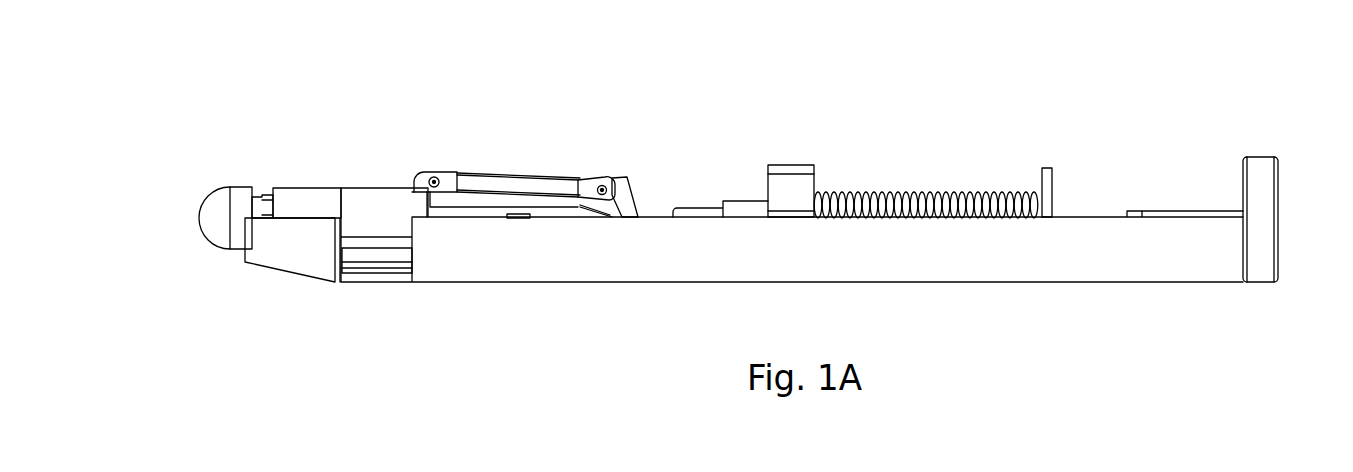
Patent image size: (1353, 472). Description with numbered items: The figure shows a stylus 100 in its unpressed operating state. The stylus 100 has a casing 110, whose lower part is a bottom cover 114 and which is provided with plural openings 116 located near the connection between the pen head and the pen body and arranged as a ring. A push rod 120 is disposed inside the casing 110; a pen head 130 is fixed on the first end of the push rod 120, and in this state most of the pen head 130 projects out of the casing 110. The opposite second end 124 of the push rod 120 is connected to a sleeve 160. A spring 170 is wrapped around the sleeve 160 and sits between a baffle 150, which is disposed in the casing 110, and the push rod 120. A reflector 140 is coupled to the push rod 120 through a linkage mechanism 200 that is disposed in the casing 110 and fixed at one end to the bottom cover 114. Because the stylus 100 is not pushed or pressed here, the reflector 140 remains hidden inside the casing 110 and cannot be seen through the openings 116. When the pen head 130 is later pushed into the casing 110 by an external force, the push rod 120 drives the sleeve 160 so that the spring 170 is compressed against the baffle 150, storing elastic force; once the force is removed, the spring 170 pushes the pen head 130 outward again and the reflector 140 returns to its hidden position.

The stylus 100 is at (178, 44).
The casing 110 is at (1278, 173).
The bottom cover 114 is at (1143, 282).
The openings 116 is at (383, 268).
The push rod 120 is at (498, 213).
The second end 124 is at (590, 210).
The pen head 130 is at (214, 212).
The reflector 140 is at (298, 205).
The baffle 150 is at (1052, 182).
The sleeve 160 is at (788, 184).
The spring 170 is at (917, 195).
The linkage mechanism 200 is at (650, 178).